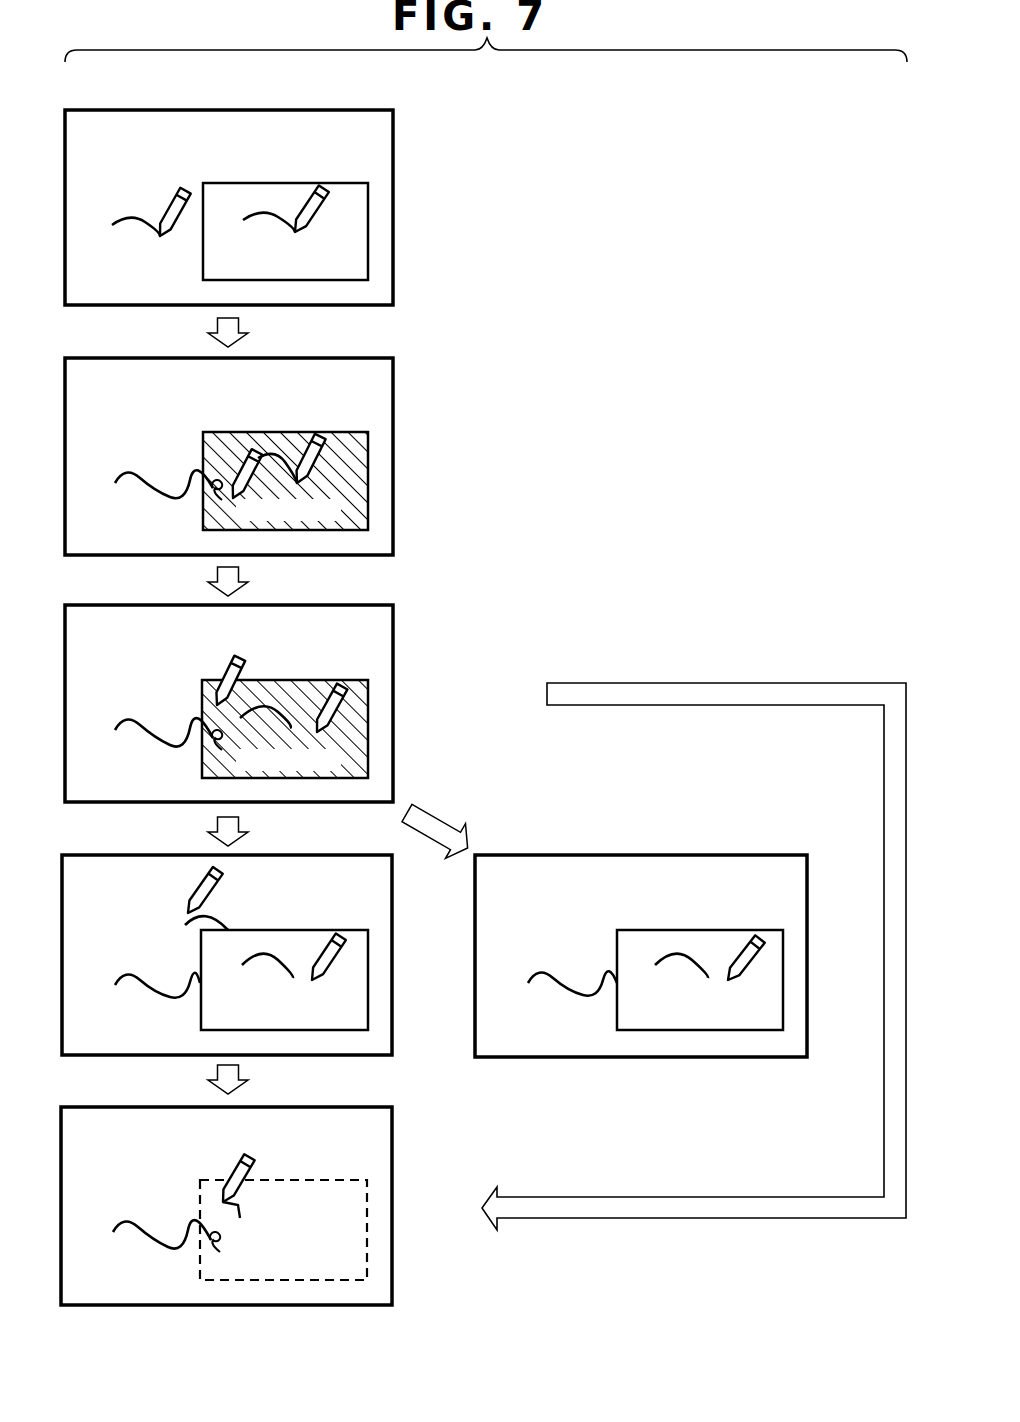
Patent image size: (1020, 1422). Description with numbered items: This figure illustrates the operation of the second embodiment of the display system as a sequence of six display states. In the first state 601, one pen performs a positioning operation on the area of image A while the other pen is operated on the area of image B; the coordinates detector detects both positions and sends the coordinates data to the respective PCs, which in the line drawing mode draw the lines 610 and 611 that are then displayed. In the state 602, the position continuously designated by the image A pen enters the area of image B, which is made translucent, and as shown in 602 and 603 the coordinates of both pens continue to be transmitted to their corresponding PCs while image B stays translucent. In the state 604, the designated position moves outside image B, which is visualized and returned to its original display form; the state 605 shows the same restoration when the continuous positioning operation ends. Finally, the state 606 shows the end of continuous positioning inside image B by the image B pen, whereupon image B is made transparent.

The first operation state 601 is at (405, 136).
The second operation state 602 is at (405, 386).
The third operation state 603 is at (405, 634).
The fourth operation state 604 is at (165, 849).
The fifth operation state 605 is at (640, 835).
The sixth operation state 606 is at (405, 1137).
The line 610 is at (120, 226).
The line 611 is at (262, 210).